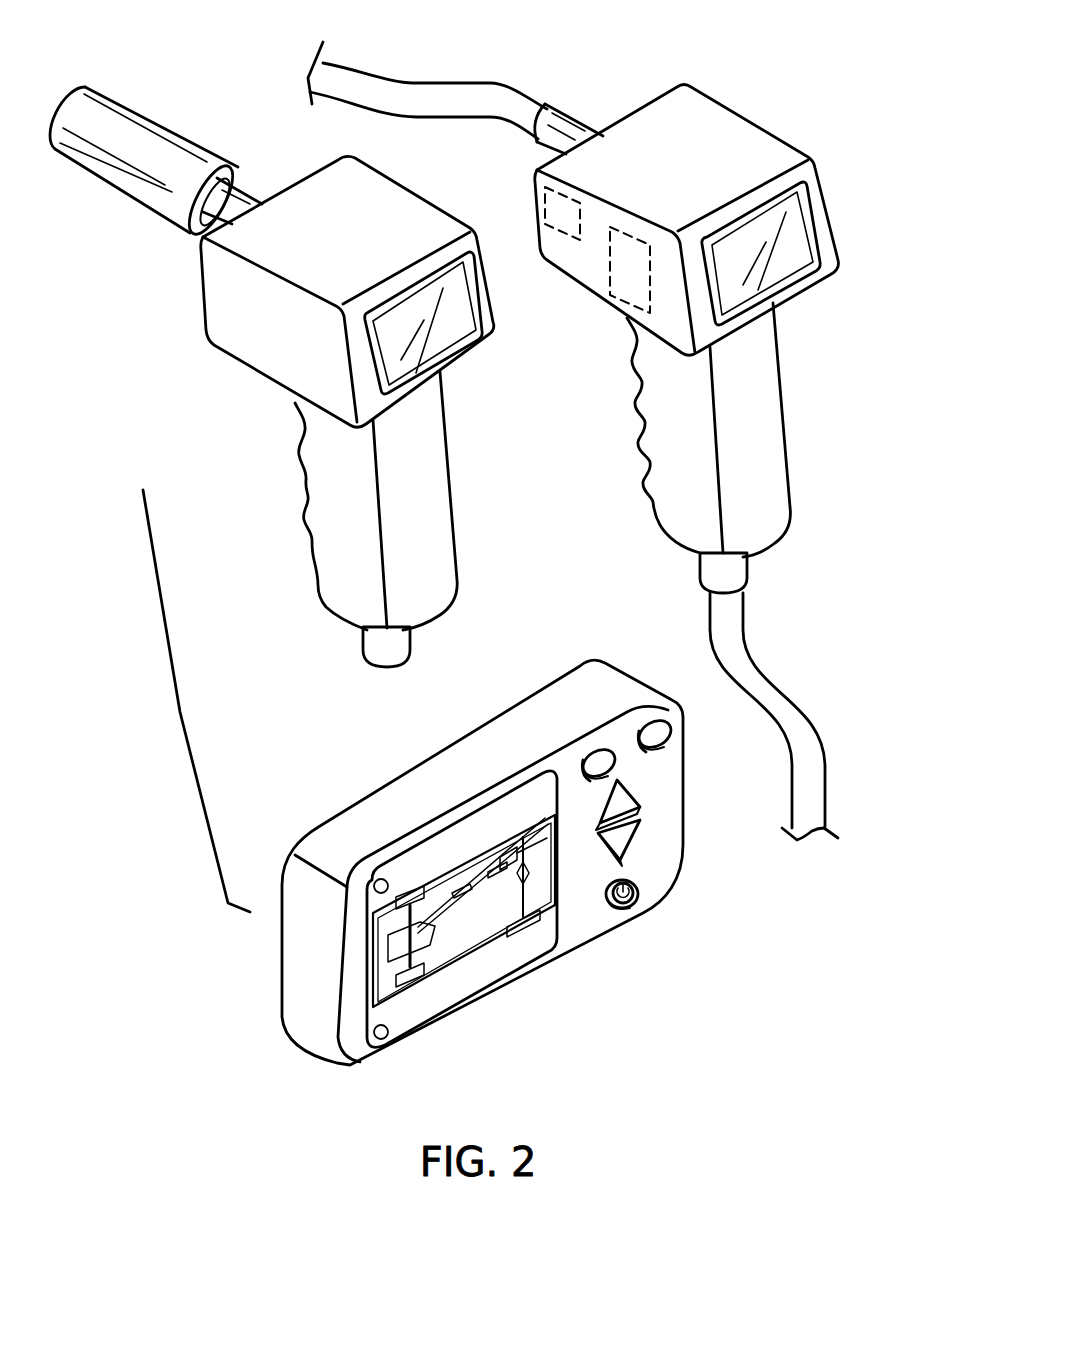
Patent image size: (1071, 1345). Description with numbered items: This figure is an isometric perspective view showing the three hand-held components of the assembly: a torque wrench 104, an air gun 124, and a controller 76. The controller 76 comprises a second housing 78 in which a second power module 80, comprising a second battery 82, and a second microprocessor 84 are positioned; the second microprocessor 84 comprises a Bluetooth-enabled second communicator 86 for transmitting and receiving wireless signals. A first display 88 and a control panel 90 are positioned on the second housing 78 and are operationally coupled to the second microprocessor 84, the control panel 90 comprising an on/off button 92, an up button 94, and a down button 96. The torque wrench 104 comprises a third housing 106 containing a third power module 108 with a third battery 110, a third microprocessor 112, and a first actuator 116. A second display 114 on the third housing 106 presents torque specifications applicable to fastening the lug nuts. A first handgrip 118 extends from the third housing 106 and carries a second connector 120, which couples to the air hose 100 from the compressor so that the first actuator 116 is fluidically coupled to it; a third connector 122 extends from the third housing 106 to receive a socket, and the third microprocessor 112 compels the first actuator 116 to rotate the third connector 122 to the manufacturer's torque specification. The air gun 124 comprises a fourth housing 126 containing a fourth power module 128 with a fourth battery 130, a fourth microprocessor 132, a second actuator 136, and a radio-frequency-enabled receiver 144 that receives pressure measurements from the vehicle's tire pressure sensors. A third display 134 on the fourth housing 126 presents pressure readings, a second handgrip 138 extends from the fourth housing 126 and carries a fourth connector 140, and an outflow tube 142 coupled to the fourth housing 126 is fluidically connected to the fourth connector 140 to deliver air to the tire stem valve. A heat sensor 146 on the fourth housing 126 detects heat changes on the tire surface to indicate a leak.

The controller 76 is at (450, 873).
The second housing 78 is at (643, 918).
The second power module 80 is at (304, 947).
The second battery 82 is at (304, 991).
The second microprocessor 84 is at (304, 1014).
The second communicator 86 is at (313, 1032).
The first display 88 is at (463, 963).
The control panel 90 is at (612, 878).
The on/off button 92 is at (640, 888).
The up button 94 is at (633, 795).
The down button 96 is at (640, 833).
The air hose 100 is at (800, 727).
The torque wrench 104 is at (200, 287).
The third housing 106 is at (213, 343).
The third power module 108 is at (245, 328).
The third battery 110 is at (275, 355).
The third microprocessor 112 is at (313, 370).
The second display 114 is at (433, 333).
The first actuator 116 is at (364, 279).
The first handgrip 118 is at (433, 487).
The second connector 120 is at (390, 655).
The third connector 122 is at (235, 185).
The air gun 124 is at (733, 150).
The fourth housing 126 is at (757, 153).
The fourth power module 128 is at (773, 163).
The fourth battery 130 is at (800, 138).
The fourth microprocessor 132 is at (623, 273).
The third display 134 is at (797, 227).
The second actuator 136 is at (677, 228).
The second handgrip 138 is at (782, 454).
The fourth connector 140 is at (743, 573).
The outflow tube 142 is at (503, 90).
The receiver 144 is at (817, 148).
The heat sensor 146 is at (512, 202).